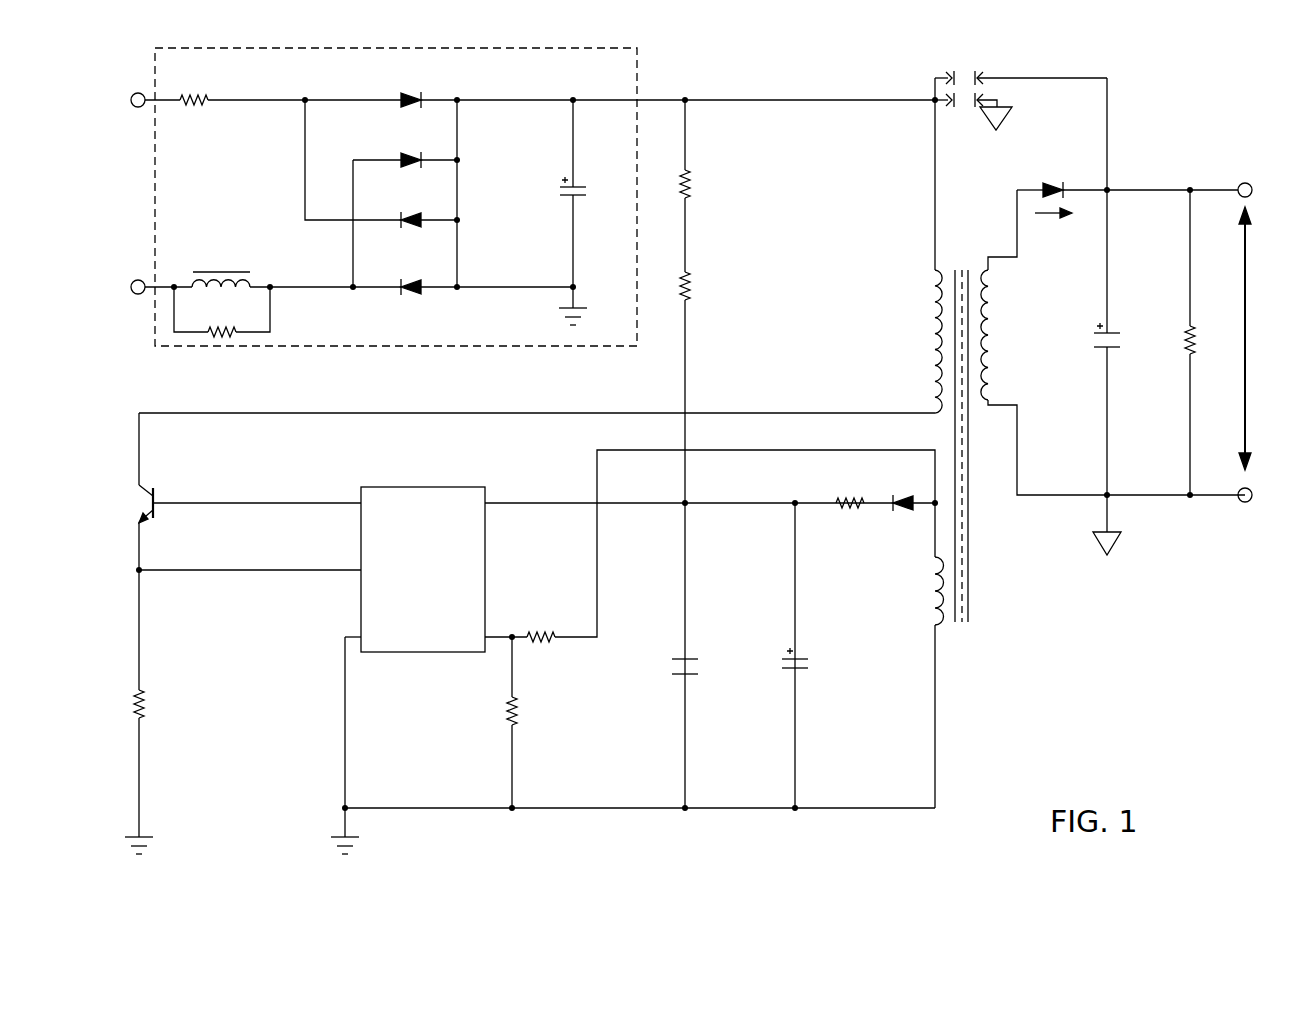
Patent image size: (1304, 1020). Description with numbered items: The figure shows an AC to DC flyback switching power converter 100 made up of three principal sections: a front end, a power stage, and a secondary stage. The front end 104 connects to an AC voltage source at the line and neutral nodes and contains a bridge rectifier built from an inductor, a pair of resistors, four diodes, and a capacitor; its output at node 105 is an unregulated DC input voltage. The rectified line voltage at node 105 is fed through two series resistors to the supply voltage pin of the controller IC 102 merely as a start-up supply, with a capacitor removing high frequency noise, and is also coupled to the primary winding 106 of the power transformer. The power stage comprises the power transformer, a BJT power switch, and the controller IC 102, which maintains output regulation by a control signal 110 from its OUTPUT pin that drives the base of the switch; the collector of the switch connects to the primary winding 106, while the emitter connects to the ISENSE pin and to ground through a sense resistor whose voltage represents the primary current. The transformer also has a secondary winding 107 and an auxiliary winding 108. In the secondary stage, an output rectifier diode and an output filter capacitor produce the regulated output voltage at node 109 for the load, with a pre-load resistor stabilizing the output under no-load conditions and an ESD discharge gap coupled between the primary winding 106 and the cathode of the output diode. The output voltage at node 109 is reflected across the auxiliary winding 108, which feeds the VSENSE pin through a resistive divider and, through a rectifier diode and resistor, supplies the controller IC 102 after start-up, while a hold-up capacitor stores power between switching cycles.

The power converter 100 is at (1045, 643).
The controller IC 102 is at (385, 487).
The front end 104 is at (637, 72).
The node 105 is at (687, 103).
The primary winding 106 is at (938, 288).
The secondary winding 107 is at (990, 300).
The auxiliary winding 108 is at (938, 592).
The node 109 is at (1190, 188).
The control signal 110 is at (213, 500).